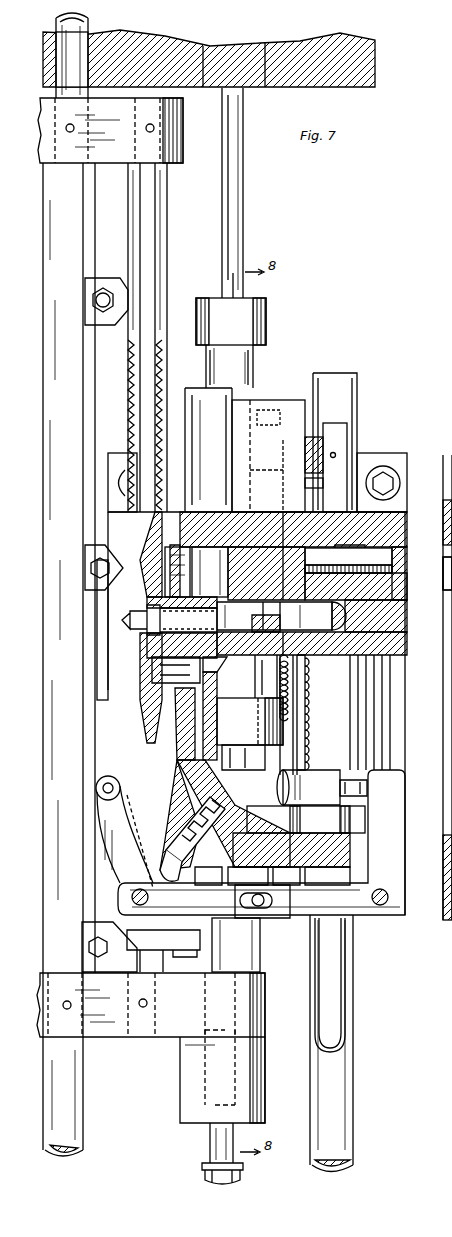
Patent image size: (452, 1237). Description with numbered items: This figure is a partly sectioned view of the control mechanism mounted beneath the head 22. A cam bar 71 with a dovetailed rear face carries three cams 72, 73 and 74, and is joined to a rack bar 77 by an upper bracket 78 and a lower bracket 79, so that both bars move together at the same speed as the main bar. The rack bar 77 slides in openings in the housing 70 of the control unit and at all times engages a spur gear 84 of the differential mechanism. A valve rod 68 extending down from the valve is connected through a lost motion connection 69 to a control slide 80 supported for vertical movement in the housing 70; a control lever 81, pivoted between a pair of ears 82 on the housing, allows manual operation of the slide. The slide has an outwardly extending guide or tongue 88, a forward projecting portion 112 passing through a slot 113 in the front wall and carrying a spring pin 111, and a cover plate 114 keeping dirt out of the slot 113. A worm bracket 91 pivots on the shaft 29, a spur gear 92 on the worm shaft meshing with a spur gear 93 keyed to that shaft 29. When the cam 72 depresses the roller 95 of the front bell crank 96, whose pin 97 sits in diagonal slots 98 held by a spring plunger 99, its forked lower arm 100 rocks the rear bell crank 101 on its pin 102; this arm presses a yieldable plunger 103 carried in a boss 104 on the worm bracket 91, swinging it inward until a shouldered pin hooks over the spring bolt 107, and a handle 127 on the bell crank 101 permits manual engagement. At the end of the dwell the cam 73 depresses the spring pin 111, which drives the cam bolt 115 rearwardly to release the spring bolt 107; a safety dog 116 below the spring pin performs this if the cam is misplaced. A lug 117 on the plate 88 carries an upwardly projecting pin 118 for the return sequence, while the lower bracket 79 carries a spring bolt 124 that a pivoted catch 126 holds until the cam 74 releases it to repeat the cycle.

The head 22 is at (360, 67).
The bracket 78 is at (178, 138).
The cam bar 71 is at (67, 426).
The rack bar 77 is at (163, 262).
The cam 73 is at (105, 276).
The valve rod 68 is at (237, 232).
The lost motion connection 69 is at (256, 327).
The control slide 80 is at (246, 368).
The control lever 81 is at (290, 462).
The ears 82 is at (340, 440).
The housing 70 is at (407, 462).
The shaft 29 is at (450, 415).
The handle 127 is at (335, 1022).
The cover plate 114 is at (145, 700).
The slot 113 is at (200, 575).
The forward projecting portion 112 is at (172, 600).
The spring pin 111 is at (130, 628).
The spring bolt 107 is at (345, 613).
The spur gear 92 is at (392, 568).
The spur gear 93 is at (443, 572).
The cam bolt 115 is at (305, 655).
The dog 116 is at (226, 662).
The pin 118 is at (236, 712).
The lug 117 is at (240, 748).
The guide or tongue 88 is at (207, 725).
The diagonal slots 98 is at (180, 855).
The spring plunger 99 is at (180, 868).
The spur gear 84 is at (283, 788).
The yieldable plunger 103 is at (345, 778).
The boss 104 is at (300, 802).
The worm bracket 91 is at (378, 706).
The rear bell crank 101 is at (392, 832).
The pin 97 is at (149, 901).
The pin 102 is at (383, 906).
The forked lower arm 100 is at (265, 908).
The roller 95 is at (115, 780).
The front bell crank 96 is at (140, 812).
The cam 74 is at (90, 946).
The pivoted catch 126 is at (172, 952).
The spring bolt 124 is at (240, 960).
The lower bracket 79 is at (113, 1020).
The cam 72 is at (110, 556).